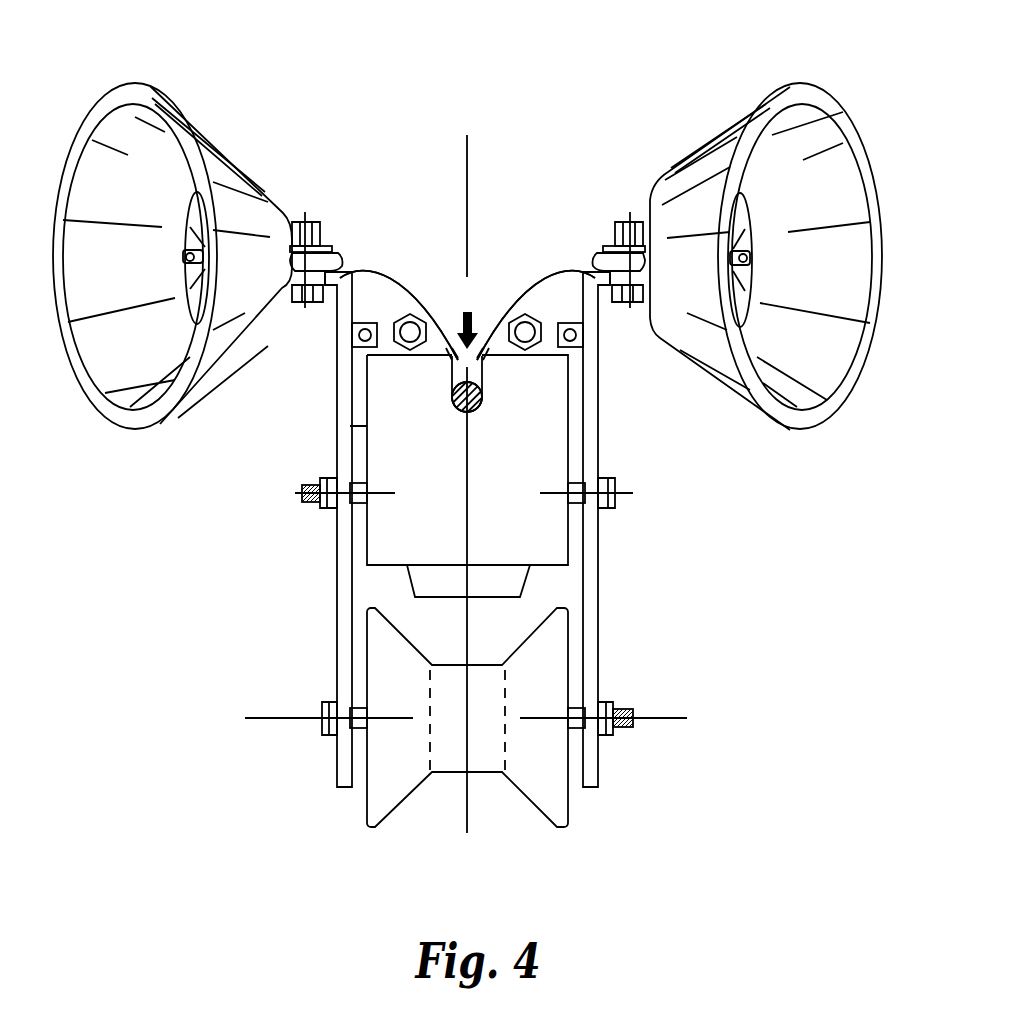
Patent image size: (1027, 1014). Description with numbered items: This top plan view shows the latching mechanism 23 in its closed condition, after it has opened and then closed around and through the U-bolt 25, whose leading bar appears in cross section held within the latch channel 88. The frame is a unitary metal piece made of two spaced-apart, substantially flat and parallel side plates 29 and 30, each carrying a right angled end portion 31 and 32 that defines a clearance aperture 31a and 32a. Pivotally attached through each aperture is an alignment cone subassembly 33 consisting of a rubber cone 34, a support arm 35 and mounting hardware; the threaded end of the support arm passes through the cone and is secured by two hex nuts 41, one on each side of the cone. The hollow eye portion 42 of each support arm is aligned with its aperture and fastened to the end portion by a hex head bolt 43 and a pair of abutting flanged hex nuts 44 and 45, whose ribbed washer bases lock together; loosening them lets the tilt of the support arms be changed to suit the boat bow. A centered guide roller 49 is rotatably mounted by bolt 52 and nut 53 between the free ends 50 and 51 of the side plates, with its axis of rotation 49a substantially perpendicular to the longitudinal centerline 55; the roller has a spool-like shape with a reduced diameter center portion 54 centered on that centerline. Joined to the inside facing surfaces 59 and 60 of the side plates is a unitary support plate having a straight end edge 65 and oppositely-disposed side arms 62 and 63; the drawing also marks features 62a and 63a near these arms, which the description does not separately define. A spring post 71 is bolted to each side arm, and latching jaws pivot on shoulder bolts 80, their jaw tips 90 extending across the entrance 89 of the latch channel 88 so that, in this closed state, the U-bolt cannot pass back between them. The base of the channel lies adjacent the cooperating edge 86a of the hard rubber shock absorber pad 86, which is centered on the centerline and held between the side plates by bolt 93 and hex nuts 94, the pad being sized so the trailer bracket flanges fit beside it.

The latching mechanism 23 is at (596, 106).
The U-bolt 25 is at (453, 402).
The side plate 29 is at (337, 618).
The side plate 30 is at (598, 628).
The right angled end portion 31 is at (292, 276).
The clearance aperture 31a is at (345, 252).
The right angled end portion 32 is at (622, 280).
The clearance aperture 32a is at (642, 222).
The alignment cone subassembly 33 is at (205, 133).
The rubber cone 34 is at (100, 162).
The support arm 35 is at (186, 262).
The hex nuts 41 is at (200, 238).
The hollow eye portion 42 is at (624, 222).
The hex head bolt 43 is at (310, 303).
The flanged hex nut 44 is at (630, 303).
The flanged hex nut 45 is at (293, 222).
The guide roller 49 is at (380, 805).
The centerline axis of rotation 49a is at (258, 716).
The free end 50 is at (344, 790).
The free end 51 is at (591, 790).
The bolt 52 is at (322, 728).
The nut 53 is at (612, 732).
The reduced diameter center portion 54 is at (467, 722).
The longitudinal centerline 55 is at (460, 822).
The inside facing surface 59 is at (353, 686).
The inside facing surface 60 is at (598, 660).
The side arm 62 is at (406, 314).
The left guide arm 62a is at (357, 290).
The side arm 63 is at (528, 314).
The right guide arm 63a is at (574, 305).
The straight end edge 65 is at (495, 600).
The spring post 71 is at (572, 322).
The shoulder bolts 80 is at (430, 300).
The shock absorber pad 86 is at (375, 558).
The cooperating edge 86a is at (484, 410).
The latch channel 88 is at (460, 412).
The entrance 89 is at (455, 346).
The jaw tips 90 is at (452, 372).
The bolt 93 is at (633, 493).
The hex nuts 94 is at (302, 490).